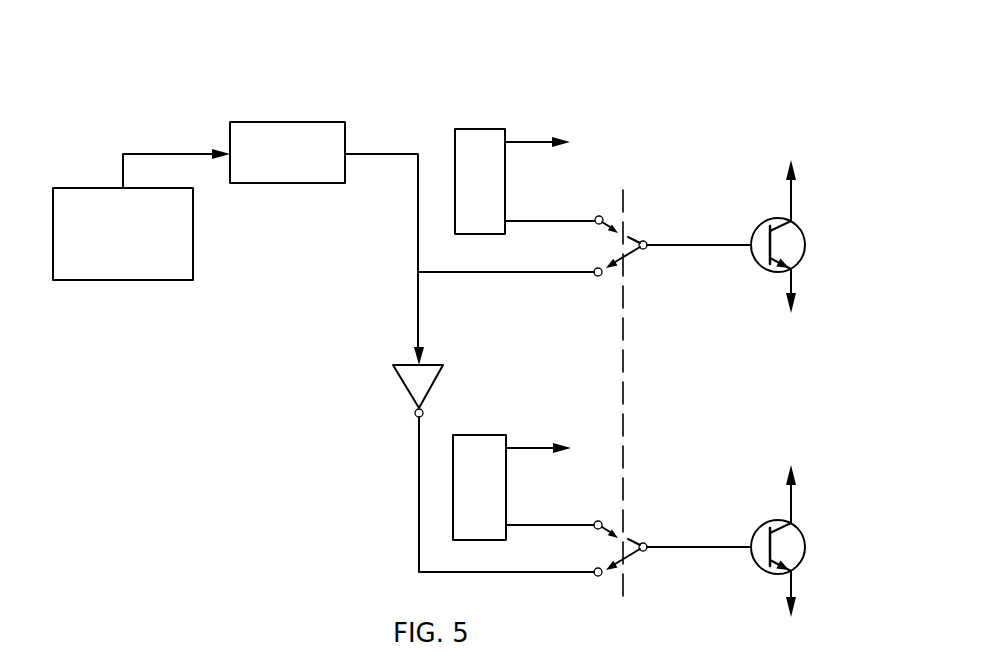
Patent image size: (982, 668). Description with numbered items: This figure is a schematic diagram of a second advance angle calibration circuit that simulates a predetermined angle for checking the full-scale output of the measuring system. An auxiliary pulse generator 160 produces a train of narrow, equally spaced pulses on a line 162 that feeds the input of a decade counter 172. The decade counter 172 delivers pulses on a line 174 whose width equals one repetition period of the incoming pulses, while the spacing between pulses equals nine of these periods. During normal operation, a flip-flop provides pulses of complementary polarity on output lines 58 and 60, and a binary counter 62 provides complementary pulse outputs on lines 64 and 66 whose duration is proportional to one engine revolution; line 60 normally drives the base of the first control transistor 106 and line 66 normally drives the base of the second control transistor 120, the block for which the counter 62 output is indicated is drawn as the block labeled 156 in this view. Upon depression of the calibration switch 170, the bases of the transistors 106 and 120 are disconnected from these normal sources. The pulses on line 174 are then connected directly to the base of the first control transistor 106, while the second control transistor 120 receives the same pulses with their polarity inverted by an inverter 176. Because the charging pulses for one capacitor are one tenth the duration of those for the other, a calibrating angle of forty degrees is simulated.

The auxiliary pulse generator 160 is at (80, 187).
The line 162 is at (143, 150).
The decade counter 172 is at (263, 122).
The line 174 is at (383, 152).
The control block 156 is at (470, 128).
The complementary output line 58 is at (535, 140).
The complementary output line 60 is at (545, 220).
The calibration switch 170 is at (636, 222).
The transistor 106 is at (806, 243).
The inverter 176 is at (441, 377).
The binary counter 62 is at (478, 435).
The line 64 is at (530, 447).
The line 66 is at (550, 525).
The second control transistor 120 is at (805, 536).